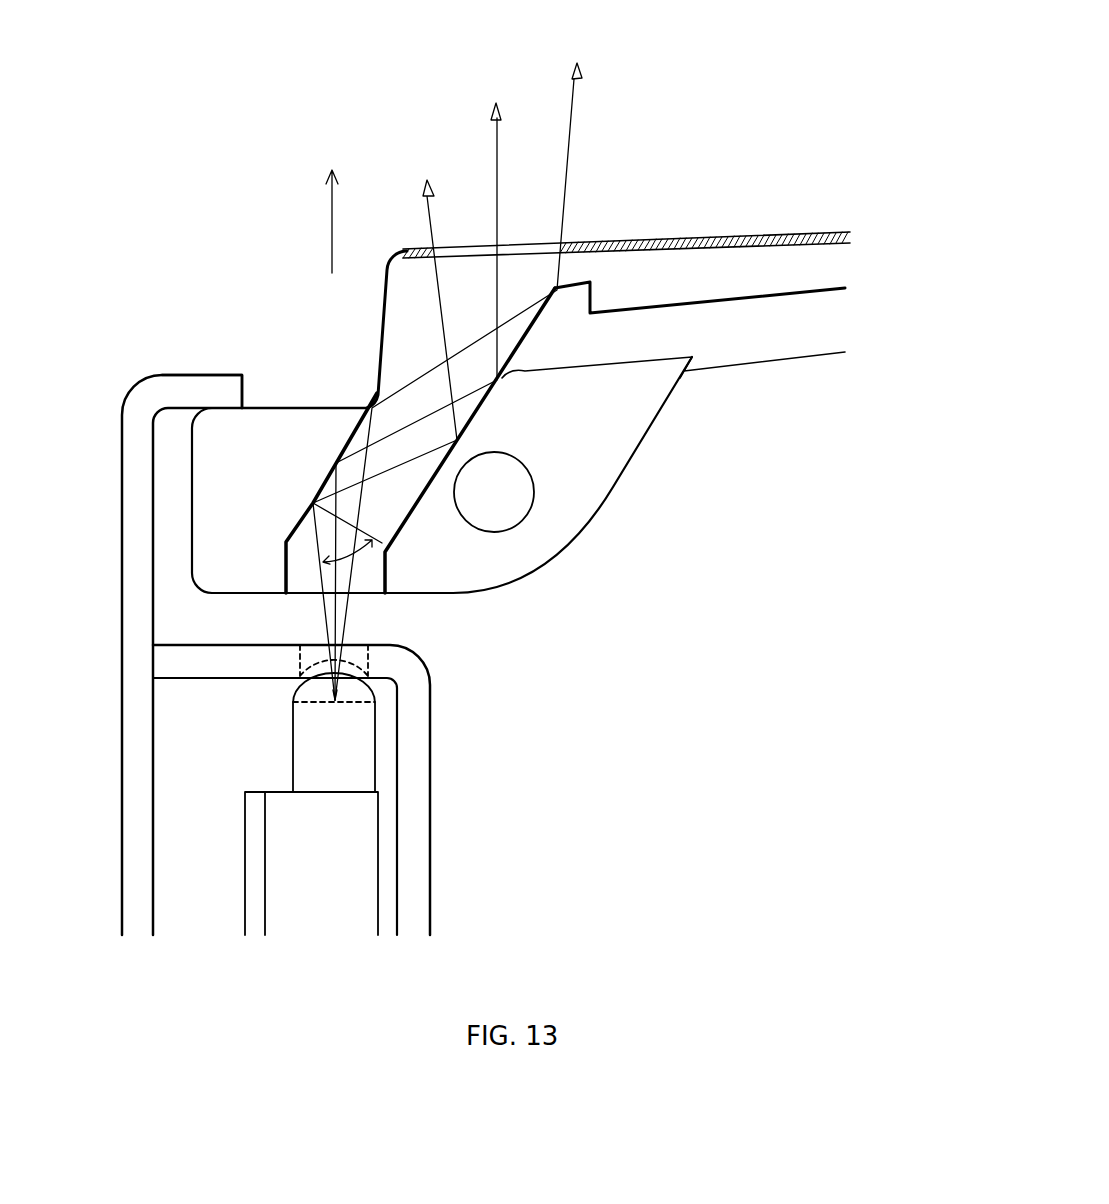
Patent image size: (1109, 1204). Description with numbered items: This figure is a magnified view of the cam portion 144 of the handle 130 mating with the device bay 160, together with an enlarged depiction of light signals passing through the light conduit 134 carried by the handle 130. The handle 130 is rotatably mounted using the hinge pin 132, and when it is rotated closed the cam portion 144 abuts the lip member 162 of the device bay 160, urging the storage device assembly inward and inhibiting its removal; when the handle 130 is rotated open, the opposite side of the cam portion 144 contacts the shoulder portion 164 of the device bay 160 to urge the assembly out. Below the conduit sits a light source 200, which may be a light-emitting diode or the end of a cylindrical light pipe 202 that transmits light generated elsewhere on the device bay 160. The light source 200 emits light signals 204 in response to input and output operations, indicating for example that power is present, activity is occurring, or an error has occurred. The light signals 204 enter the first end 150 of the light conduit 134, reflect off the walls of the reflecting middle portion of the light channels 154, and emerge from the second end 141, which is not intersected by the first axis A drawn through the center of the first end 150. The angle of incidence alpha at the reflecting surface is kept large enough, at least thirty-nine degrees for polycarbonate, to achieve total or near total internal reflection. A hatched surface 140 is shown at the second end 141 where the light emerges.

The handle 130 is at (603, 354).
The hinge pin 132 is at (621, 453).
The light conduit 134 is at (394, 332).
The panel surface 140 is at (848, 237).
The second end 141 is at (662, 222).
The cam portion 144 is at (285, 425).
The first end 150 is at (375, 598).
The light channels 154 is at (398, 503).
The device bay 160 is at (368, 623).
The lip member 162 is at (192, 385).
The shoulder portion 164 is at (235, 672).
The light source 200 is at (363, 693).
The light pipe 202 is at (357, 772).
The light signals 204 is at (312, 627).